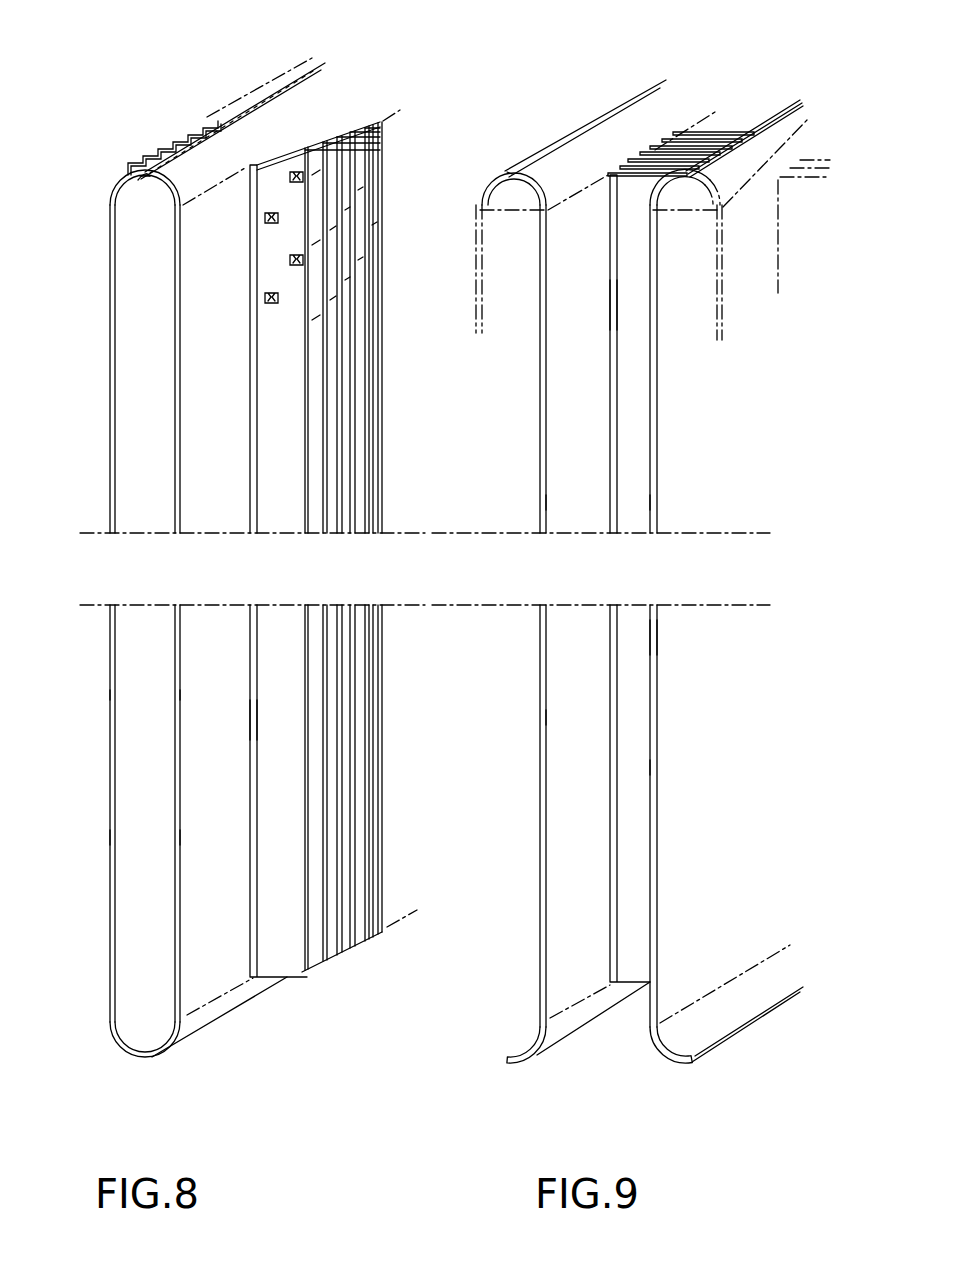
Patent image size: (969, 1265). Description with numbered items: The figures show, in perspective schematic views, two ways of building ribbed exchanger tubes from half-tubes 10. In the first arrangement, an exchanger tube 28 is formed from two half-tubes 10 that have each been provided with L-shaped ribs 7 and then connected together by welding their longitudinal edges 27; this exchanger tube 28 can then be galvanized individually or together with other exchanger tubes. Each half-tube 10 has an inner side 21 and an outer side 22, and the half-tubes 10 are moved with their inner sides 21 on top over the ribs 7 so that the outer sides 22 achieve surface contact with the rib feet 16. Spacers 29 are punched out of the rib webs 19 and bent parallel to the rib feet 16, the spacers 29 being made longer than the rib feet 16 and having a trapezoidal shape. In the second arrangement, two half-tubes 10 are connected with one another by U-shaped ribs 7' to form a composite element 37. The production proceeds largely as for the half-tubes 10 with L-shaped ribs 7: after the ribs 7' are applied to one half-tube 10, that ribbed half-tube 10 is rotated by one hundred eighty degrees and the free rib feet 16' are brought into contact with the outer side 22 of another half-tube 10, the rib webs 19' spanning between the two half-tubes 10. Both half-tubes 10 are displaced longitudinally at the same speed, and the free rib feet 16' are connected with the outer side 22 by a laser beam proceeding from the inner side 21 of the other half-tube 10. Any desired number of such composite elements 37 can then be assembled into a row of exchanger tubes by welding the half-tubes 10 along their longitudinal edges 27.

In FIG. 8, the rib 7 is at (276, 541).
In FIG. 9, the U-shaped rib 7' is at (606, 324).
In FIG. 8, the half-tube 10 is at (172, 398).
In FIG. 9, the half-tube 10 is at (470, 300).
In FIG. 8, the rib foot 16 is at (254, 571).
In FIG. 9, the free rib foot 16' is at (606, 578).
In FIG. 8, the rib web 19 is at (242, 720).
In FIG. 9, the rib web 19' is at (682, 637).
In FIG. 8, the inner side 21 is at (175, 832).
In FIG. 9, the inner side 21 is at (538, 720).
In FIG. 8, the outer side 22 is at (188, 692).
In FIG. 9, the outer side 22 is at (548, 505).
In FIG. 8, the longitudinal edge 27 is at (150, 175).
In FIG. 9, the longitudinal edge 27 is at (507, 172).
In FIG. 8, the exchanger tube 28 is at (259, 92).
In FIG. 9, the exchanger tube 28 is at (568, 126).
In FIG. 8, the spacer 29 is at (263, 300).
In FIG. 9, the composite element 37 is at (732, 105).